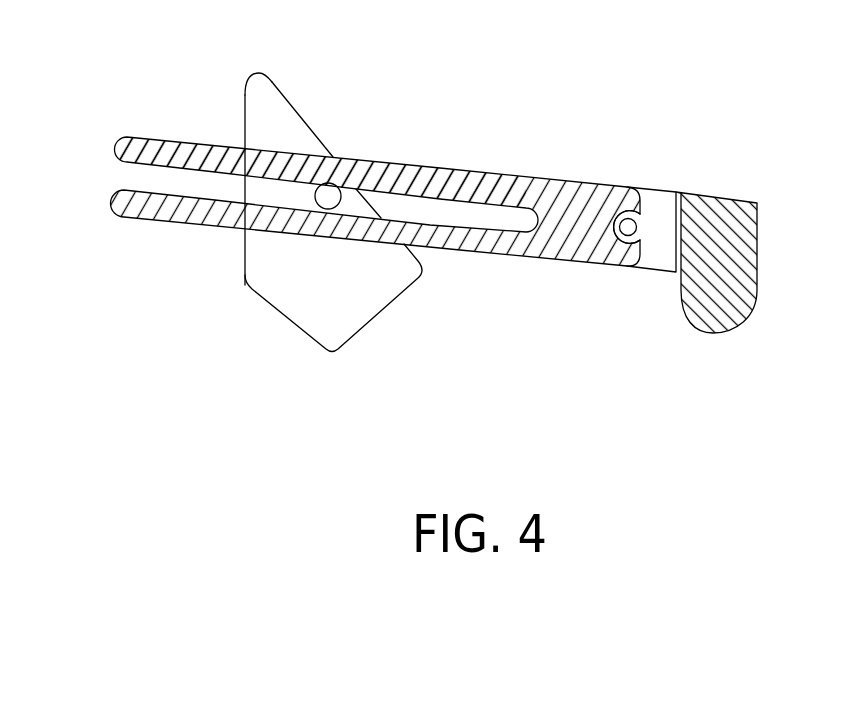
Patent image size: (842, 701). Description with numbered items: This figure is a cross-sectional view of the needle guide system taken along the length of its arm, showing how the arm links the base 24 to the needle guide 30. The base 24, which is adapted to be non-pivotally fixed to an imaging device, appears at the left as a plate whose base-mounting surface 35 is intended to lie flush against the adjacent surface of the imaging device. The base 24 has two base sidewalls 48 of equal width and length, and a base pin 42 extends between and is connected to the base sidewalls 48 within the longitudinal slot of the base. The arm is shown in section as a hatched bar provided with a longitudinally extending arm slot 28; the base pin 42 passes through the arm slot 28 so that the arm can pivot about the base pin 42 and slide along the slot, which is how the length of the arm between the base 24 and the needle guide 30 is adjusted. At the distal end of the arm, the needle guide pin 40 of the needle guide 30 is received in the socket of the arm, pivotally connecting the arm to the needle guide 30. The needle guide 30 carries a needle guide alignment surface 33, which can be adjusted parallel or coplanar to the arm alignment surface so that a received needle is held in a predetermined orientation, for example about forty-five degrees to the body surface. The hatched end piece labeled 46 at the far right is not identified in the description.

The base 24 is at (340, 324).
The arm slot 28 is at (440, 203).
The needle guide 30 is at (728, 148).
The needle guide alignment surface 33 is at (613, 189).
The base-mounting surface 35 is at (245, 122).
The needle guide pin 40 is at (650, 194).
The base pin 42 is at (338, 184).
The end cap 46 is at (742, 228).
The base sidewalls 48 is at (473, 183).